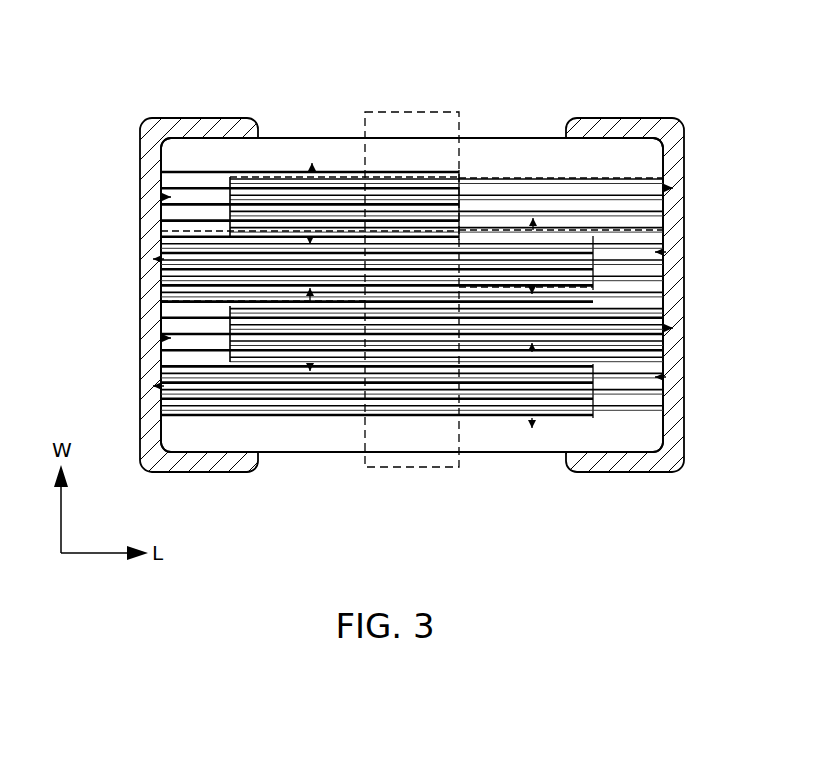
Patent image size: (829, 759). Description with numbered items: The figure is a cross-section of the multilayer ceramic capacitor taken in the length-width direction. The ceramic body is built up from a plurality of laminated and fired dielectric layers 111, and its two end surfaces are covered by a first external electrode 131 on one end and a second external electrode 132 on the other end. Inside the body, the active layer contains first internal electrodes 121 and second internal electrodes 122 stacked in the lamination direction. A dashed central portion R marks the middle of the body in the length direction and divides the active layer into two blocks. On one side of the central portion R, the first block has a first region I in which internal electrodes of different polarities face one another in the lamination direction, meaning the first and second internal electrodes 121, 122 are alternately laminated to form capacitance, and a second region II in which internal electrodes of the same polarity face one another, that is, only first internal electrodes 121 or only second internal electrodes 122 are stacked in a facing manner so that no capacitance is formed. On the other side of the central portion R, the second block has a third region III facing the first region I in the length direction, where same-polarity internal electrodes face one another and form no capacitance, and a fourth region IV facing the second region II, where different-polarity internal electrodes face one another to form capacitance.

The dielectric layer 111 is at (275, 385).
The first internal electrode 121 is at (337, 377).
The second internal electrode 122 is at (487, 385).
The first external electrode 131 is at (202, 128).
The second external electrode 132 is at (605, 118).
The central portion R is at (405, 112).
The first region I is at (298, 177).
The second region II is at (195, 305).
The third region III is at (527, 183).
The fourth region IV is at (598, 253).